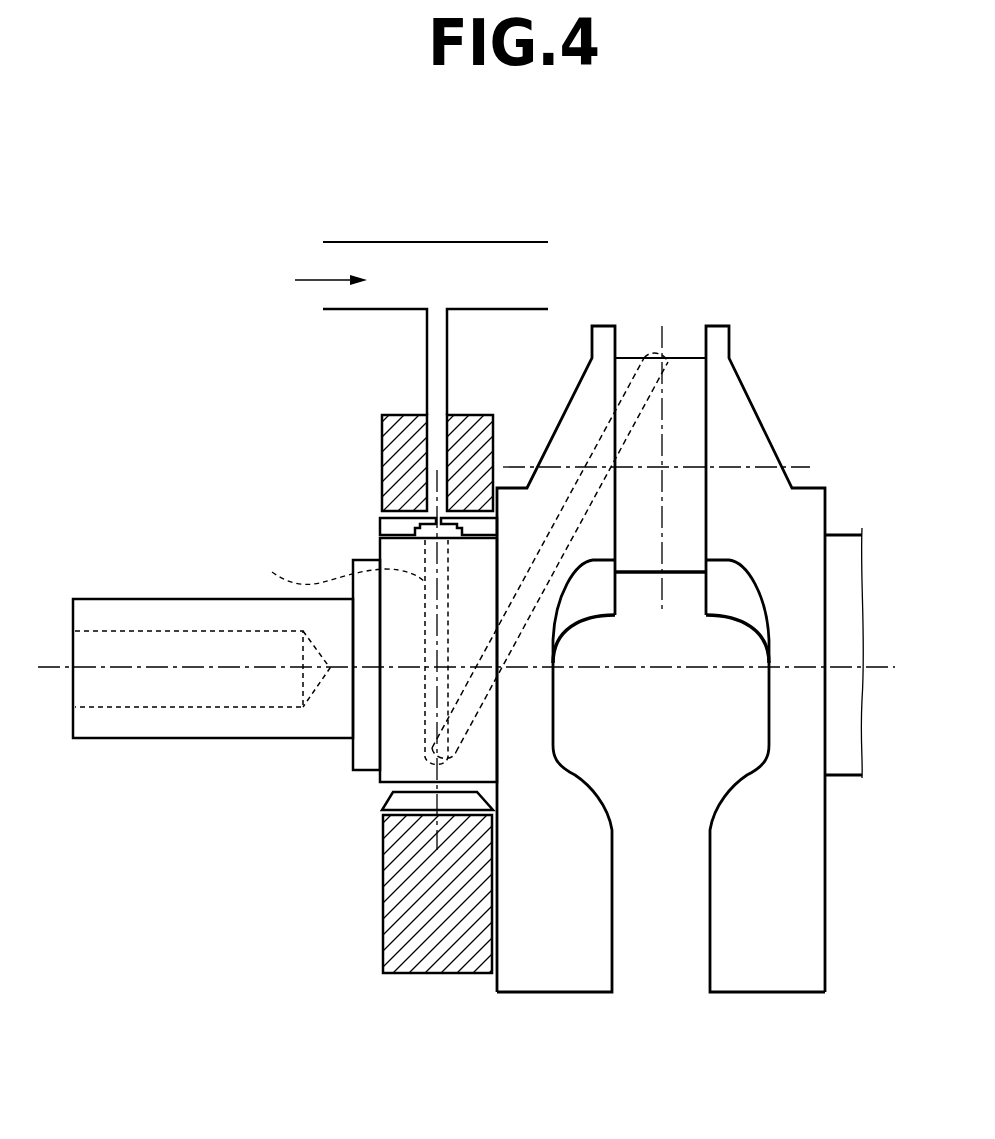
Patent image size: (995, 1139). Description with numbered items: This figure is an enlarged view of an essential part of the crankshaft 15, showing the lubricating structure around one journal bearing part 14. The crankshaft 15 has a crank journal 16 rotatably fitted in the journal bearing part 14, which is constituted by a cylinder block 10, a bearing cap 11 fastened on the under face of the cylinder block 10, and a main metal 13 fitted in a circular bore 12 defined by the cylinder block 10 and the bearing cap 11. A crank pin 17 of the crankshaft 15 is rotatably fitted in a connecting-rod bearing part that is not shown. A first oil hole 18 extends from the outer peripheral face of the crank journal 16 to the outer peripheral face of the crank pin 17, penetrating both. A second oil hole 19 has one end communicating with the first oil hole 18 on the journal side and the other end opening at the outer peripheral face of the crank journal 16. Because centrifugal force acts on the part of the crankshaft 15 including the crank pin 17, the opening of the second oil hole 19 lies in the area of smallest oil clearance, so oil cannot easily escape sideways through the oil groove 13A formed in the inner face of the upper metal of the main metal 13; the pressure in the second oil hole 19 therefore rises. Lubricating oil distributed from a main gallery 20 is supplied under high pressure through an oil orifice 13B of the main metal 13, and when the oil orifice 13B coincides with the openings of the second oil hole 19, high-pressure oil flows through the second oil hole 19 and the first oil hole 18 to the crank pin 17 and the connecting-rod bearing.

The cylinder block 10 is at (400, 450).
The bearing cap 11 is at (385, 907).
The circular bore 12 is at (393, 797).
The main metal 13 is at (365, 486).
The oil groove 13A is at (383, 545).
The oil orifice 13B is at (438, 516).
The journal bearing part 14 is at (398, 410).
The crankshaft 15 is at (806, 428).
The crank journal 16 is at (392, 745).
The crank pin 17 is at (682, 388).
The first oil hole 18 is at (587, 455).
The second oil hole 19 is at (340, 652).
The main gallery 20 is at (484, 267).